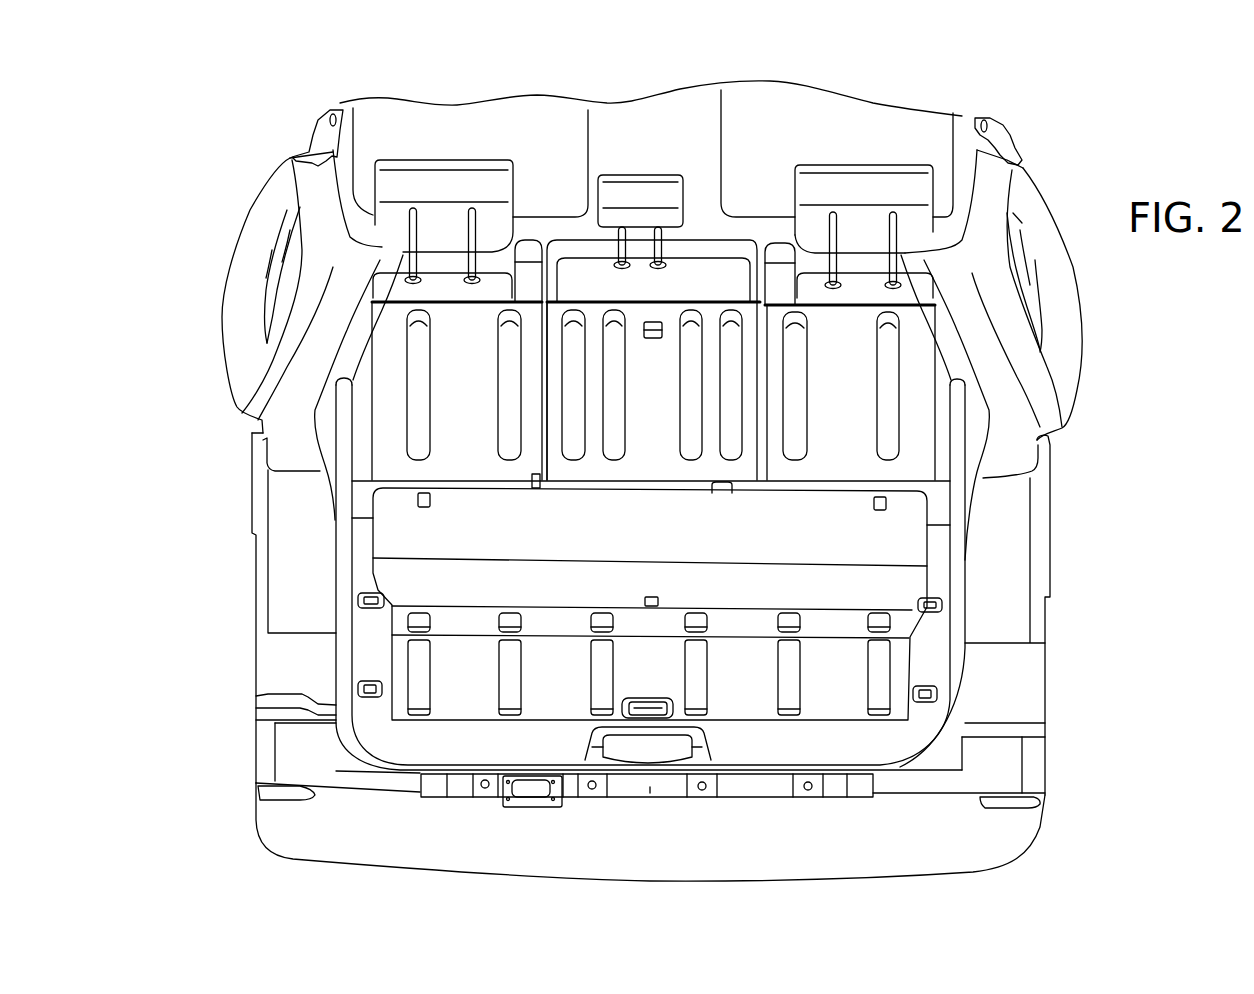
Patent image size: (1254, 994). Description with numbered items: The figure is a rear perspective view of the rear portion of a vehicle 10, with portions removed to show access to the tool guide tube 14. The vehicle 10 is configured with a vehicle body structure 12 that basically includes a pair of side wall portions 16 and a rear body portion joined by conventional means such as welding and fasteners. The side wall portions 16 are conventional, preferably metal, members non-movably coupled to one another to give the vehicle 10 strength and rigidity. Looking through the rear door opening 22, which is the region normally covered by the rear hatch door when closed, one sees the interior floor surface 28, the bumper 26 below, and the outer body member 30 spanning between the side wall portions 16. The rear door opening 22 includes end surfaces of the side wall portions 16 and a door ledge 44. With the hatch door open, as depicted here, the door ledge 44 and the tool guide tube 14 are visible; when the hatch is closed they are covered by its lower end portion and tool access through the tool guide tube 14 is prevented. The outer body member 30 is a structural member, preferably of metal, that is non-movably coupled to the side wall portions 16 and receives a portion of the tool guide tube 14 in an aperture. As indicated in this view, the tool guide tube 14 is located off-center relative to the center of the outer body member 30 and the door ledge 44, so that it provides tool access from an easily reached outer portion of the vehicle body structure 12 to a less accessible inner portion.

The vehicle 10 is at (1045, 151).
The vehicle body structure 12 is at (1072, 565).
The tool guide tube 14 is at (527, 807).
The side wall portions 16 is at (293, 430).
The rear door opening 22 is at (955, 623).
The bumper 26 is at (983, 840).
The interior floor surface 28 is at (563, 677).
The outer body member 30 is at (650, 788).
The door ledge 44 is at (423, 740).